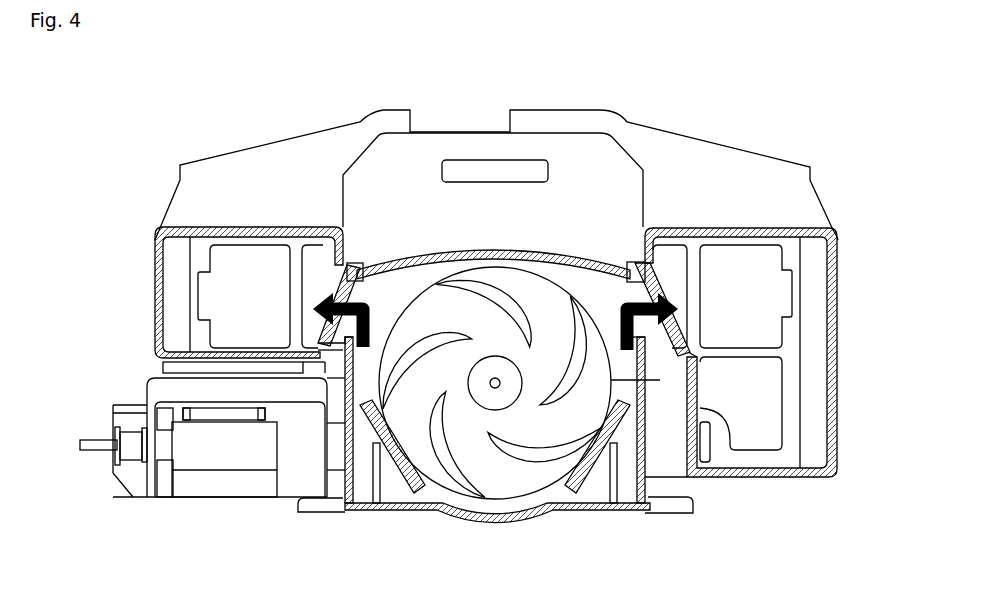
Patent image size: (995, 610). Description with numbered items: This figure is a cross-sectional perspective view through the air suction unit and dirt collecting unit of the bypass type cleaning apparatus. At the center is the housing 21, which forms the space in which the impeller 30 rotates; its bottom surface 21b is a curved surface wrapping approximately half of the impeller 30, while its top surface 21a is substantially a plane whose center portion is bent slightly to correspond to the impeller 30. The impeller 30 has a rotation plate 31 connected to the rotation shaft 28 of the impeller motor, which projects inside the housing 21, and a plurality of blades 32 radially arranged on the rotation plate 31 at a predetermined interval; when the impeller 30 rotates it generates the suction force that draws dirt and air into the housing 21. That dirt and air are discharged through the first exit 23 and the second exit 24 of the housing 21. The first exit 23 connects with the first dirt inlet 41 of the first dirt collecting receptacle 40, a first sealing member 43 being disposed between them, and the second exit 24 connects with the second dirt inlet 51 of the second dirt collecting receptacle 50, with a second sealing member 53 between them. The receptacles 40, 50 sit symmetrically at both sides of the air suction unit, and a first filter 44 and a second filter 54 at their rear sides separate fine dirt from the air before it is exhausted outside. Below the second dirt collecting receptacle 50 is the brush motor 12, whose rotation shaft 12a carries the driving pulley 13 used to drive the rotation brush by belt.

The brush motor 12 is at (187, 485).
The rotation shaft 12a is at (88, 442).
The driving pulley 13 is at (128, 448).
The housing 21 is at (490, 236).
The top surface 21a is at (408, 263).
The bottom surface 21b is at (402, 478).
The first exit 23 is at (647, 263).
The second exit 24 is at (330, 275).
The rotation shaft 28 is at (497, 383).
The impeller 30 is at (495, 433).
The rotation plate 31 is at (507, 485).
The blades 32 is at (458, 482).
The first dirt collecting receptacle 40 is at (716, 130).
The first dirt inlet 41 is at (685, 307).
The first sealing member 43 is at (650, 347).
The first filter 44 is at (748, 273).
The second dirt collecting receptacle 50 is at (260, 132).
The second dirt inlet 51 is at (317, 330).
The second sealing member 53 is at (324, 362).
The second filter 54 is at (242, 263).